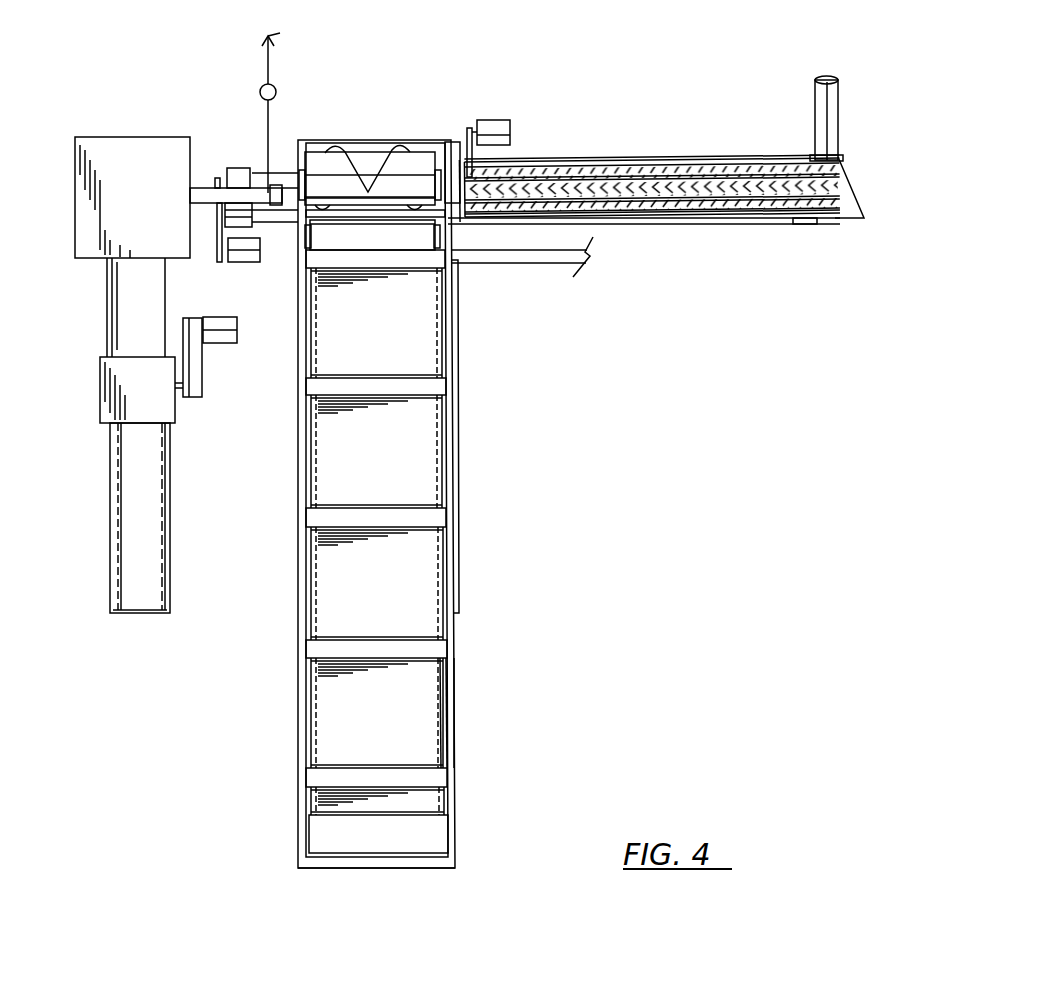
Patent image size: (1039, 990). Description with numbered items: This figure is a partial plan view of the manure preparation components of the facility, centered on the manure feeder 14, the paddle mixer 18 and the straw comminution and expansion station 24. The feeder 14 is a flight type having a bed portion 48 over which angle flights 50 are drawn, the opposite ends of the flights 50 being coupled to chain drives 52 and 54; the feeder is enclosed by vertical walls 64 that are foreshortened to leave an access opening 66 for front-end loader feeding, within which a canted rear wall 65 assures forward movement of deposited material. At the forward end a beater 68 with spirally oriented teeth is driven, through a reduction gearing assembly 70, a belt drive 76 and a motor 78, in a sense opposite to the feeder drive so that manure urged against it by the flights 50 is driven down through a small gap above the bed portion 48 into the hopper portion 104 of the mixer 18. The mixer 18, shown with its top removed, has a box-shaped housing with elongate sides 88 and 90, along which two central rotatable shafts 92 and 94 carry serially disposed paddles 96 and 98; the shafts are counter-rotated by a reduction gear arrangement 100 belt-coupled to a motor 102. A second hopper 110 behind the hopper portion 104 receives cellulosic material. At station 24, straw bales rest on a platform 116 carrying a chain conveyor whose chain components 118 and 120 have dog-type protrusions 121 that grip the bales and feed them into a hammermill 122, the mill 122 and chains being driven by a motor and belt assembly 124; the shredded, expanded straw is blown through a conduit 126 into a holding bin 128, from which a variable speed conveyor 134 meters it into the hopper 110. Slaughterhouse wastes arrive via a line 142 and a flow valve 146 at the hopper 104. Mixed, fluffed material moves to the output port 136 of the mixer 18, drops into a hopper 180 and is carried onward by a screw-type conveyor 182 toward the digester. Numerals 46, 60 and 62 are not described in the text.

The manure feeder 14 is at (527, 535).
The screw-type paddle mixer 18 is at (577, 80).
The comminution and expansion station 24 is at (82, 478).
The side frame member 46 is at (449, 695).
The bed portion 48 is at (427, 752).
The angle flights 50 is at (398, 272).
The chain drive 52 is at (436, 440).
The chain drive 54 is at (318, 584).
The base 60 is at (415, 870).
The upright frame 62 is at (297, 673).
The vertical walls 64 is at (460, 483).
The canted rear wall 65 is at (420, 835).
The access opening 66 is at (460, 727).
The beater 68 is at (333, 150).
The reduction gearing assembly 70 is at (452, 145).
The belt drive 76 is at (469, 128).
The motor 78 is at (492, 120).
The elongate side 88 is at (582, 164).
The elongate side 90 is at (680, 224).
The rotatable shaft 92 is at (722, 216).
The rotatable shaft 94 is at (718, 162).
The paddles 96 is at (636, 214).
The paddles 98 is at (660, 168).
The reduction gear arrangement 100 is at (240, 168).
The motor 102 is at (233, 256).
The hopper portion 104 is at (370, 150).
The second hopper 110 is at (268, 207).
The platform 116 is at (145, 600).
The chain component 118 is at (170, 543).
The chain component 120 is at (110, 555).
The dog-type protrusions 121 is at (168, 575).
The hammermill 122 is at (100, 385).
The motor and belt assembly 124 is at (215, 360).
The conduit 126 is at (108, 312).
The holding bin 128 is at (122, 150).
The variable speed conveyor 134 is at (192, 192).
The output port 136 is at (814, 226).
The line 142 is at (262, 75).
The flow valve 146 is at (276, 86).
The hopper 180 is at (858, 182).
The screw-type conveyor 182 is at (818, 95).